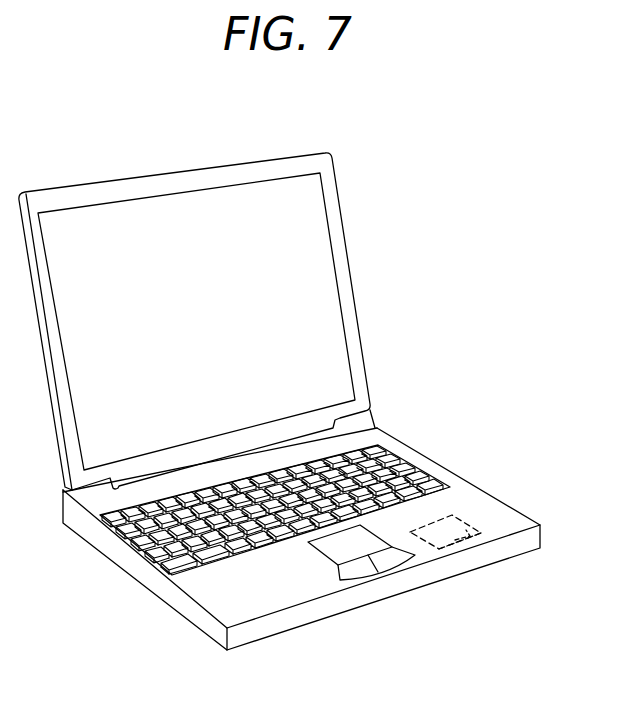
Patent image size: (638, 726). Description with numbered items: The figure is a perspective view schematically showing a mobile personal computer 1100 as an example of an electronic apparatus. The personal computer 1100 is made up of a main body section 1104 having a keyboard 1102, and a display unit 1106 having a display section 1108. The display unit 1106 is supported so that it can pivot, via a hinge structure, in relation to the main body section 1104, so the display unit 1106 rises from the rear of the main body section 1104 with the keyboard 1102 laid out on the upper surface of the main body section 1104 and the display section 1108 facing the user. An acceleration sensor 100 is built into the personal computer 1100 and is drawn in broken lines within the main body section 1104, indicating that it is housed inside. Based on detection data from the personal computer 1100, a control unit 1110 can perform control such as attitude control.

The mobile personal computer 1100 is at (420, 148).
The keyboard 1102 is at (407, 460).
The main body section 1104 is at (290, 598).
The display unit 1106 is at (350, 259).
The display section 1108 is at (188, 210).
The acceleration sensor 100 is at (472, 508).
The control unit 1110 is at (481, 536).